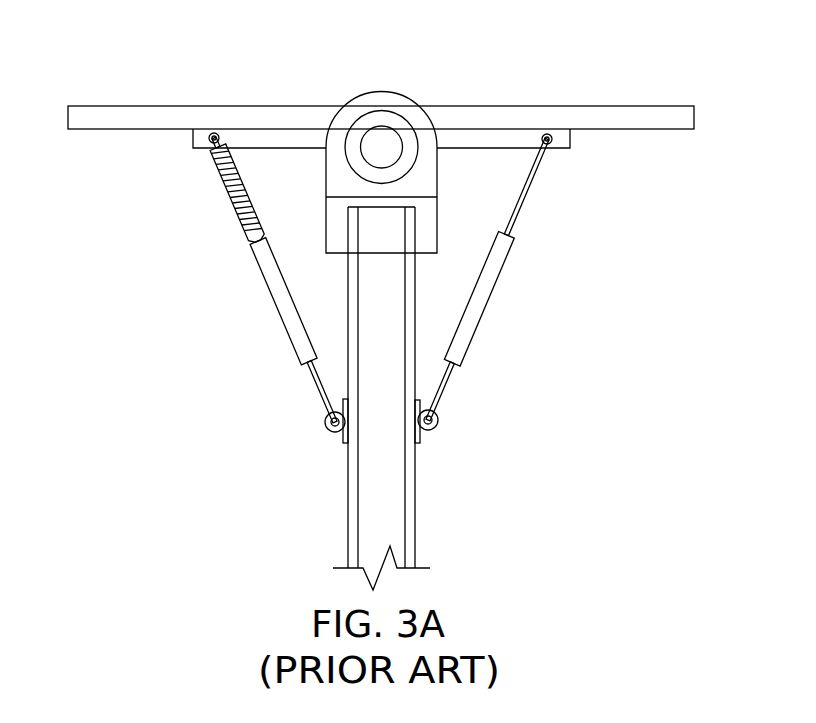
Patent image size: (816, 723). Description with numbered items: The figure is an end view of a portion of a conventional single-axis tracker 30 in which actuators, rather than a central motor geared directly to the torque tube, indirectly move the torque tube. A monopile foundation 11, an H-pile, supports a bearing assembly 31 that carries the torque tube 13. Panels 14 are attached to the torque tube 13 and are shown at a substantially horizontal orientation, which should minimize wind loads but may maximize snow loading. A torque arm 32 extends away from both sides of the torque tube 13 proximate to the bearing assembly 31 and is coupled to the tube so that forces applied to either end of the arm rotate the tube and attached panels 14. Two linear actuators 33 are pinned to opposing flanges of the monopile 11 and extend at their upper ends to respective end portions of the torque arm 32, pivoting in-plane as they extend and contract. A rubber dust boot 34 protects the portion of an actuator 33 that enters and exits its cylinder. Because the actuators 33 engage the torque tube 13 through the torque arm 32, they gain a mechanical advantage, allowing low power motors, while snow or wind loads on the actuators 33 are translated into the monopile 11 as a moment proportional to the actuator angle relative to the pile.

The single-axis tracker 30 is at (147, 50).
The monopile foundation 11 is at (415, 500).
The torque tube 13 is at (383, 147).
The panels 14 is at (597, 106).
The bearing assembly 31 is at (402, 92).
The torque arm 32 is at (555, 150).
The actuators 33 is at (277, 315).
The dust boot 34 is at (228, 202).